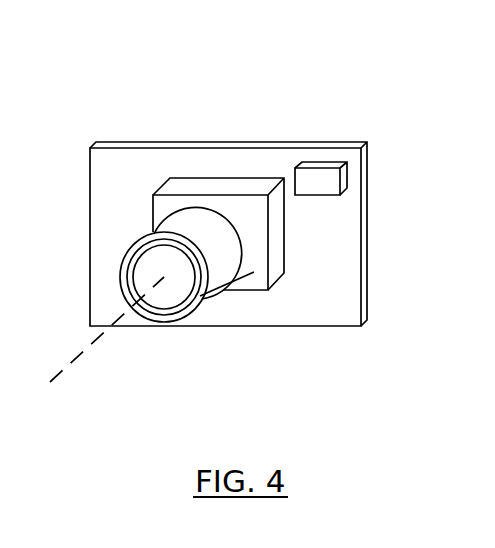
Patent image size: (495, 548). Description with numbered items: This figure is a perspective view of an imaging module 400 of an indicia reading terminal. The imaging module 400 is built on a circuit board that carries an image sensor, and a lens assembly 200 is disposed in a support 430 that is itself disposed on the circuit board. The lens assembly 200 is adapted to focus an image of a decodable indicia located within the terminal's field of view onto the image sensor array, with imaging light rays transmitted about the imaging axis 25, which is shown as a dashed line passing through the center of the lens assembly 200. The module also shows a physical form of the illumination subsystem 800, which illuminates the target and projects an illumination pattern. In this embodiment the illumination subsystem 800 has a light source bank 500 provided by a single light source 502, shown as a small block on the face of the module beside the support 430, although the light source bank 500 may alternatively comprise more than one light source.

The imaging module 400 is at (283, 99).
The single light source 502 is at (330, 180).
The illumination subsystem 800 is at (396, 240).
The light source bank 500 is at (320, 205).
The support 430 is at (217, 272).
The lens assembly 200 is at (167, 287).
The imaging axis 25 is at (93, 342).